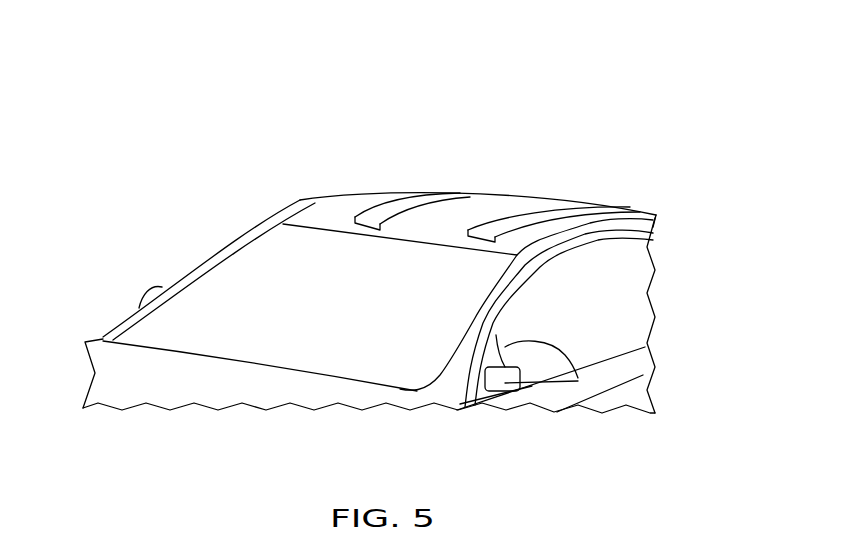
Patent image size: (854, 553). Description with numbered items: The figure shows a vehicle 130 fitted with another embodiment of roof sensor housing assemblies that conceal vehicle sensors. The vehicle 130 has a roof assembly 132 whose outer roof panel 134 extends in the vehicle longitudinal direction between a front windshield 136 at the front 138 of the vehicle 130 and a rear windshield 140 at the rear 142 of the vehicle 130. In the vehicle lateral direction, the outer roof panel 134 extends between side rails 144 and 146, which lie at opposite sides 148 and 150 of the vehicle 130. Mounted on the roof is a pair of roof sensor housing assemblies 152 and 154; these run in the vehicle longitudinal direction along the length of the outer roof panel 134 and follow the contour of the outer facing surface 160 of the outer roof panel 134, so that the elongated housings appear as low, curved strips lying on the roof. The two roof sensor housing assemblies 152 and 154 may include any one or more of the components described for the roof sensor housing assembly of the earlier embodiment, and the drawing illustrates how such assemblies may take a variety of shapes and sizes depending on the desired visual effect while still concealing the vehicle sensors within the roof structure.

The vehicle 130 is at (545, 90).
The roof assembly 132 is at (612, 118).
The outer roof panel 134 is at (377, 200).
The front windshield 136 is at (228, 268).
The front 138 is at (92, 307).
The rear windshield 140 is at (665, 362).
The rear 142 is at (647, 207).
The side rail 144 is at (625, 228).
The side rail 146 is at (310, 203).
The side 148 is at (613, 427).
The side 150 is at (142, 257).
The roof sensor housing assembly 152 is at (502, 190).
The roof sensor housing assembly 154 is at (627, 207).
The outer facing surface 160 is at (447, 238).